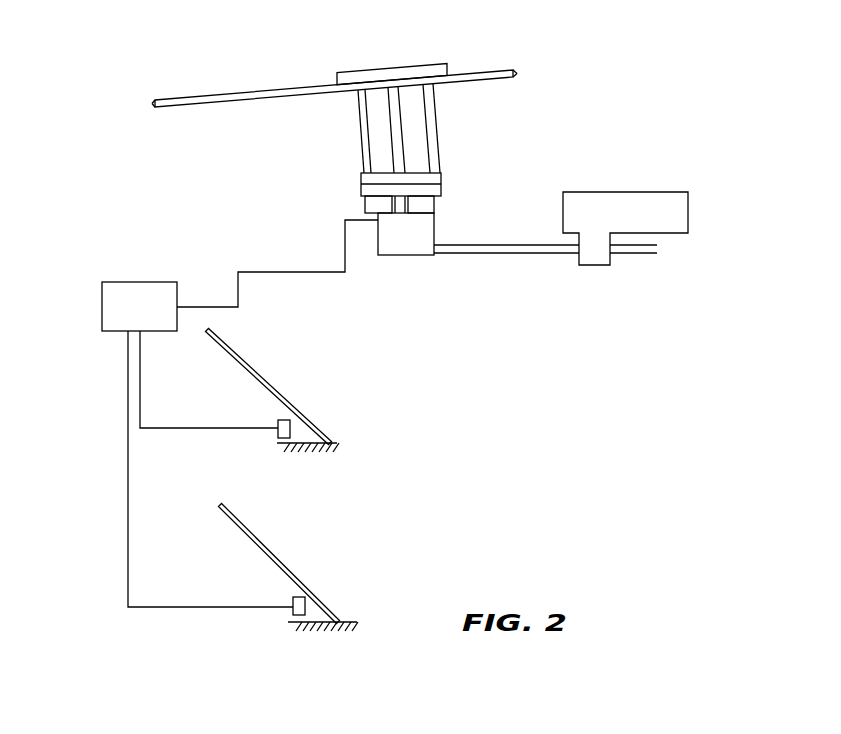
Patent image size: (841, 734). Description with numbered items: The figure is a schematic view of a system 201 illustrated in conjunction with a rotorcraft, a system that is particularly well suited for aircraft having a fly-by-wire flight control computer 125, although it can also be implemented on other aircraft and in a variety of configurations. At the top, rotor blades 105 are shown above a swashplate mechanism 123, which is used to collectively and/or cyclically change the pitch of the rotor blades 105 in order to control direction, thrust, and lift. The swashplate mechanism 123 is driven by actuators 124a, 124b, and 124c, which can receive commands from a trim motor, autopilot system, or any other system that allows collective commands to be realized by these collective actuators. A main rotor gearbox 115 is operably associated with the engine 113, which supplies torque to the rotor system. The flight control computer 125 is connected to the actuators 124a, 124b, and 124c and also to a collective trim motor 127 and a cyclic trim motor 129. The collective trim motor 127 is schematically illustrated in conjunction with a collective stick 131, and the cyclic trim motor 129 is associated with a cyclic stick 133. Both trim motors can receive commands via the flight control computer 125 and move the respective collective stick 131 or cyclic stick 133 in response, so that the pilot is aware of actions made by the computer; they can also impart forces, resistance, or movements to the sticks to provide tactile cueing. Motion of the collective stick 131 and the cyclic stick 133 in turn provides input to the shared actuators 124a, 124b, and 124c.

The rotor blades 105 is at (173, 98).
The system 201 is at (128, 232).
The swashplate mechanism 123 is at (318, 188).
The actuator 124a is at (365, 206).
The actuator 124b is at (402, 209).
The actuator 124c is at (440, 212).
The main rotor gearbox 115 is at (420, 257).
The engine 113 is at (688, 213).
The flight control computer 125 is at (113, 332).
The collective stick 131 is at (272, 388).
The collective trim motor 127 is at (278, 439).
The cyclic stick 133 is at (283, 565).
The cyclic trim motor 129 is at (294, 616).